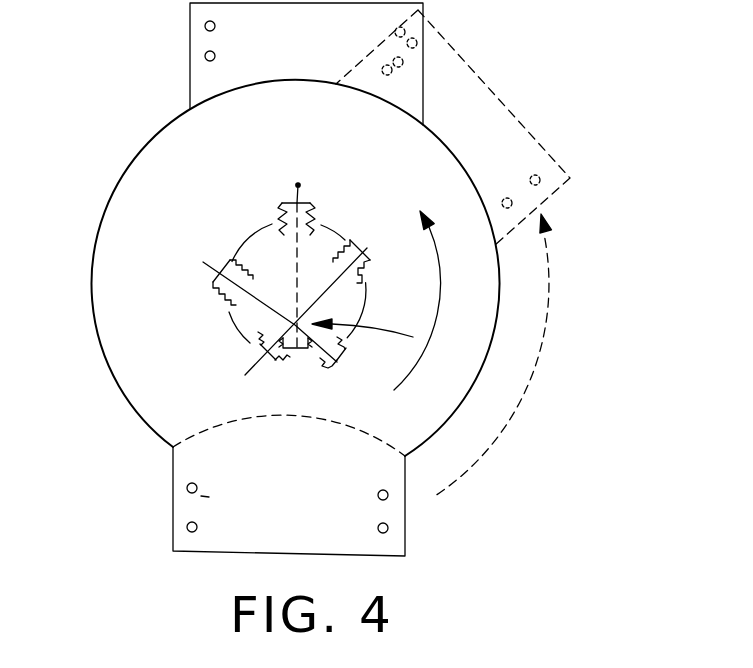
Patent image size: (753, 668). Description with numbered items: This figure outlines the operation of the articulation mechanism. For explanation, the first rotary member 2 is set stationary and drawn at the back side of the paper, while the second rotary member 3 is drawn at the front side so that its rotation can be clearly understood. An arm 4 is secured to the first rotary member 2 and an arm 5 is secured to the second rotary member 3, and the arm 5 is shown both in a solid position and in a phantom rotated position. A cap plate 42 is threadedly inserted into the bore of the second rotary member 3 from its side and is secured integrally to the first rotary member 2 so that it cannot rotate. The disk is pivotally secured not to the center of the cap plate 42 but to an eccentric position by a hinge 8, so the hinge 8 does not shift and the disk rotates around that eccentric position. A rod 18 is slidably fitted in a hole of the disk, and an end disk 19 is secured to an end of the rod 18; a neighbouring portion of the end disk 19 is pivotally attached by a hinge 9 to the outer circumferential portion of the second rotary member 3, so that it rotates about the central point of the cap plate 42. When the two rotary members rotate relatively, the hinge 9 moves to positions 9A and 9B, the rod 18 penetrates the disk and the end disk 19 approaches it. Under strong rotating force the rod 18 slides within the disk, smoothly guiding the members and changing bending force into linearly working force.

The first rotary member 2 is at (400, 443).
The second rotary member 3 is at (457, 387).
The arm 4 is at (218, 40).
The arm 5 is at (363, 515).
The hinge 8 is at (413, 337).
The hinge 9 is at (298, 185).
The hinge position 9A is at (205, 262).
The hinge position 9B is at (252, 366).
The rod 18 is at (300, 262).
The end disk 19 is at (308, 203).
The cap plate 42 is at (363, 300).